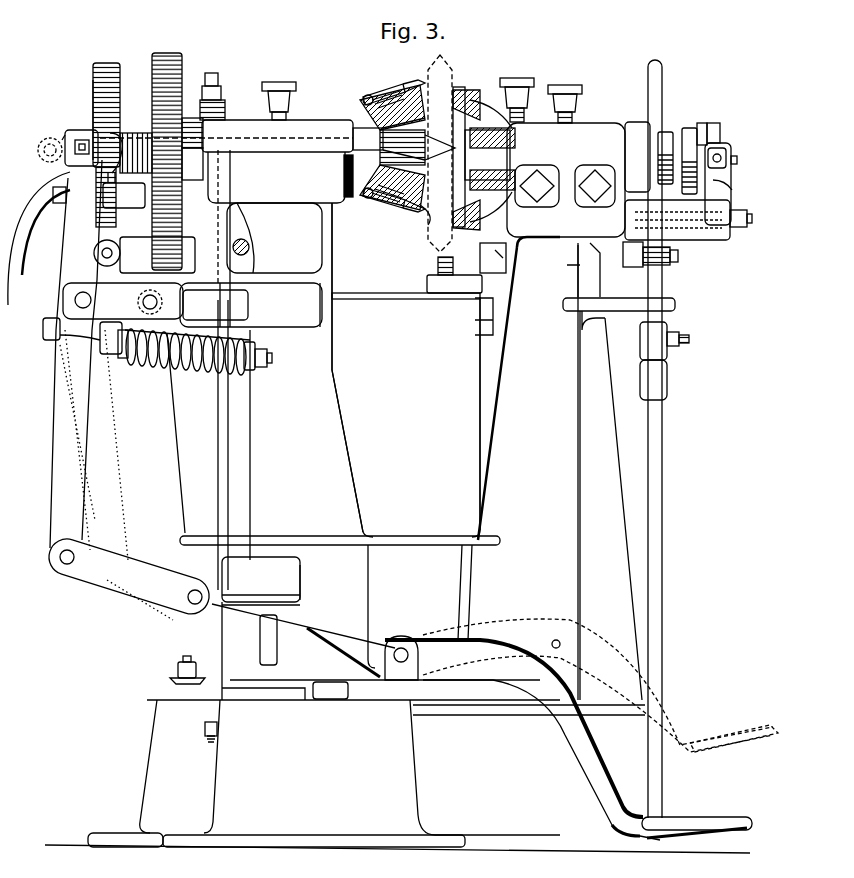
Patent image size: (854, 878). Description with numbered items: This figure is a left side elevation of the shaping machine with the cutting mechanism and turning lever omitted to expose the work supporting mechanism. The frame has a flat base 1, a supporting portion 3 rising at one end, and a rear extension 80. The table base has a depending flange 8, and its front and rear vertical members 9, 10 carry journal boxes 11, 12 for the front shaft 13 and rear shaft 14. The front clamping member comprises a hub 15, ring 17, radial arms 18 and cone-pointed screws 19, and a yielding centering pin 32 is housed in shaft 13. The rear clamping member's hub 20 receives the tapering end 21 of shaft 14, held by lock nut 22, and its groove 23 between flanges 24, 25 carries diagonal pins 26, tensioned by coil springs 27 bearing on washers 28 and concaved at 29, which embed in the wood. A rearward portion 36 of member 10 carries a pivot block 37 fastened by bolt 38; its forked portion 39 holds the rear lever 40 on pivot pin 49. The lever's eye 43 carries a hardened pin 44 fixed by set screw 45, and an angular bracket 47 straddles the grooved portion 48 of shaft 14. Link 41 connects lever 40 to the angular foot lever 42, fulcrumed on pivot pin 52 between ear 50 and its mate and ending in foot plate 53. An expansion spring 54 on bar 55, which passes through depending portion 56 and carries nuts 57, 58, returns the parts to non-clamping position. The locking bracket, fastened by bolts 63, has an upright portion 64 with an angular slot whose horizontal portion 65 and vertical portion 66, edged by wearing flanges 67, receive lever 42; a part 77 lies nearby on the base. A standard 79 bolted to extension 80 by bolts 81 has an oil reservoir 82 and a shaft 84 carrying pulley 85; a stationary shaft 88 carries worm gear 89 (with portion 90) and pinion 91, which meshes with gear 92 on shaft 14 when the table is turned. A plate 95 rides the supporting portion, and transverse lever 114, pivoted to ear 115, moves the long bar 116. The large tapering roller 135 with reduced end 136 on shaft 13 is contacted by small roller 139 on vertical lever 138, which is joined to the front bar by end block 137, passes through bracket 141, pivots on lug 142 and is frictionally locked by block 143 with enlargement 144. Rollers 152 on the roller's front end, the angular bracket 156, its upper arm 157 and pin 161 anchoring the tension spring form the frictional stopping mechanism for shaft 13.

The base pedestal 1 is at (485, 767).
The frame upright 3 is at (611, 505).
The bed plate 8 is at (480, 708).
The frame column 9 is at (528, 468).
The frame column 10 is at (381, 367).
The bearing housing 11 is at (562, 157).
The bearing body 12 is at (276, 177).
The clutch hub 13 is at (488, 161).
The collar 14 is at (344, 170).
The clutch disc member 15 is at (478, 128).
The clutch disc rim 17 is at (460, 90).
The clutch disc member 18 is at (492, 185).
The clutch disc rim 19 is at (462, 224).
The cone clutch 20 is at (385, 135).
The shaft 21 is at (353, 137).
The clutch cone core 22 is at (417, 147).
The threaded stud 23 is at (388, 95).
The stud tip 24 is at (392, 102).
The stud head 25 is at (380, 94).
The stud head 26 is at (365, 192).
The threaded stud 27 is at (385, 196).
The stud tip 28 is at (408, 205).
The hook 29 is at (428, 222).
The clutch plate 32 is at (458, 158).
The bracket 36 is at (260, 322).
The bracket slot 37 is at (215, 305).
The spring rod 38 is at (128, 350).
The pivot plate 39 is at (123, 301).
The lever 40 is at (111, 390).
The link 41 is at (95, 575).
The treadle lever 42 is at (522, 740).
The pin 43 is at (66, 135).
The pivot 44 is at (62, 148).
The pivot block 45 is at (80, 140).
The arm 47 is at (124, 190).
The pinion 48 is at (122, 130).
The pivot pin 49 is at (76, 296).
The lug 50 is at (398, 638).
The pivot pin 52 is at (404, 648).
The foot plate 53 is at (700, 818).
The spring 54 is at (203, 370).
The link 55 is at (95, 345).
The spring anchor 56 is at (115, 354).
The adjusting screw 57 is at (262, 368).
The stop 58 is at (48, 340).
The screw 63 is at (205, 728).
The bracket 64 is at (261, 579).
The bracket 65 is at (284, 578).
The slot 66 is at (268, 665).
The bracket bar 67 is at (240, 600).
The block 77 is at (330, 691).
The rod 79 is at (208, 445).
The pedestal 80 is at (180, 766).
The screw 81 is at (178, 668).
The arm 82 is at (133, 240).
The pivot 84 is at (100, 257).
The arc arm 85 is at (39, 238).
The bearing 88 is at (222, 145).
The worm gear 89 is at (108, 63).
The gear face 90 is at (93, 90).
The hub 91 is at (194, 118).
The gear 92 is at (168, 60).
The bracket 95 is at (488, 258).
The cross bar 114 is at (386, 300).
The block 115 is at (454, 276).
The boss 116 is at (249, 245).
The block 135 is at (637, 128).
The threaded sleeve 136 is at (688, 130).
The bolt 137 is at (665, 265).
The rod 138 is at (654, 437).
The collar 139 is at (666, 132).
The plate 141 is at (675, 303).
The foot 142 is at (615, 822).
The block 143 is at (654, 354).
The sleeve 144 is at (667, 390).
The plate 152 is at (716, 125).
The shaft 156 is at (722, 238).
The bracket 157 is at (728, 140).
The pin 161 is at (704, 124).